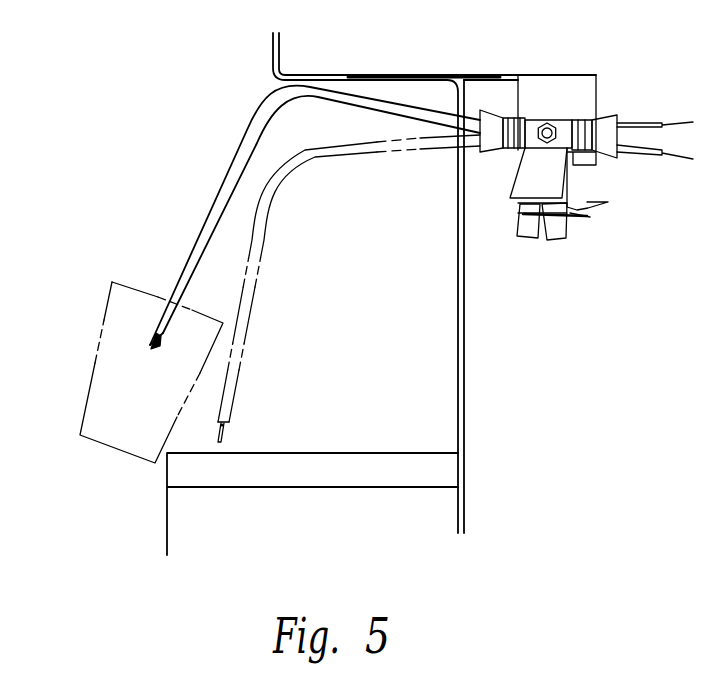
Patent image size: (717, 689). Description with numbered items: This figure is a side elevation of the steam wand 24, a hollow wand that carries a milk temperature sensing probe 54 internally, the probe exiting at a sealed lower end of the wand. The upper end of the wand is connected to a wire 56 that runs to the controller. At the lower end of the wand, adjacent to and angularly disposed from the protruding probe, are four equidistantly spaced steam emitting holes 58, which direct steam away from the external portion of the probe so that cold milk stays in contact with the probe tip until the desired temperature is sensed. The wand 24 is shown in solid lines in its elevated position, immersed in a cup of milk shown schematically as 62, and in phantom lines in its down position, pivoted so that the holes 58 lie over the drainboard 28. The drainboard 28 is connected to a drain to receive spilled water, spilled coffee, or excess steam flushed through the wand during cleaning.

The steam wand 24 is at (237, 157).
The drainboard 28 is at (323, 452).
The temperature sensing probe 54 is at (152, 347).
The wire 56 is at (678, 157).
The steam emitting holes 58 is at (157, 330).
The cup of milk 62 is at (95, 367).